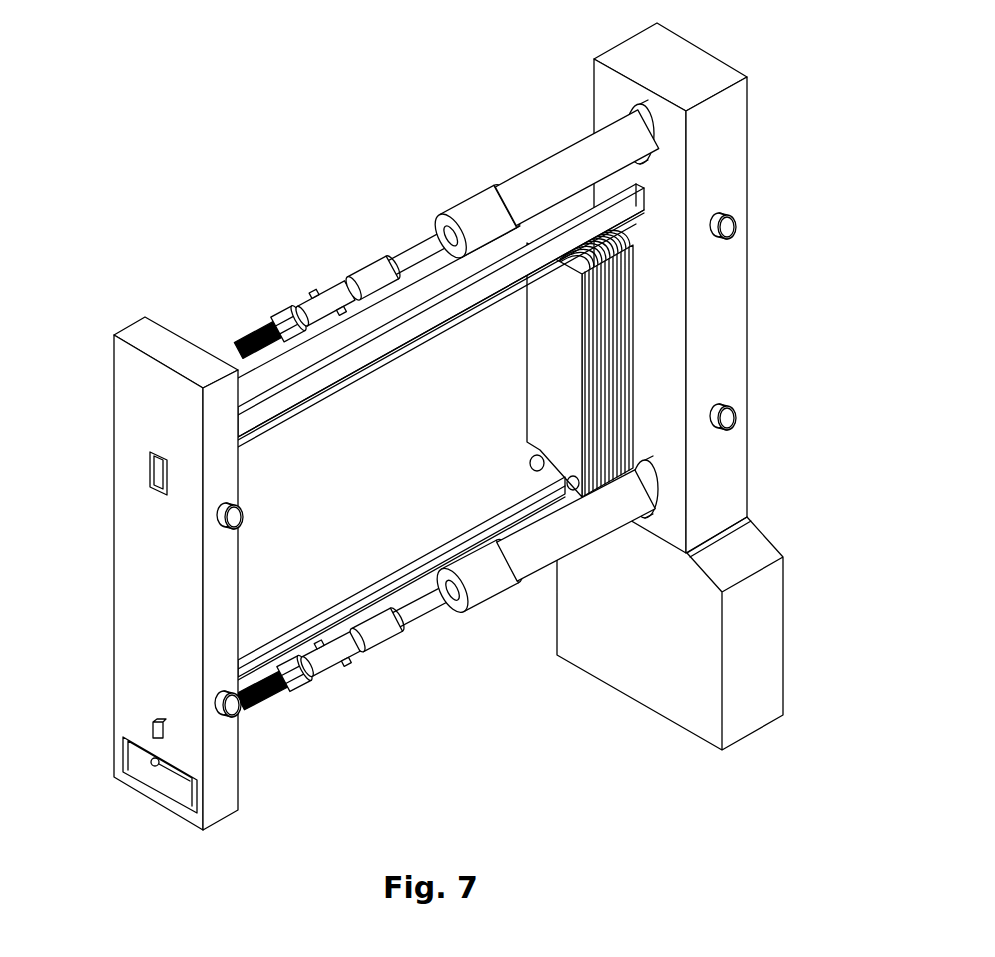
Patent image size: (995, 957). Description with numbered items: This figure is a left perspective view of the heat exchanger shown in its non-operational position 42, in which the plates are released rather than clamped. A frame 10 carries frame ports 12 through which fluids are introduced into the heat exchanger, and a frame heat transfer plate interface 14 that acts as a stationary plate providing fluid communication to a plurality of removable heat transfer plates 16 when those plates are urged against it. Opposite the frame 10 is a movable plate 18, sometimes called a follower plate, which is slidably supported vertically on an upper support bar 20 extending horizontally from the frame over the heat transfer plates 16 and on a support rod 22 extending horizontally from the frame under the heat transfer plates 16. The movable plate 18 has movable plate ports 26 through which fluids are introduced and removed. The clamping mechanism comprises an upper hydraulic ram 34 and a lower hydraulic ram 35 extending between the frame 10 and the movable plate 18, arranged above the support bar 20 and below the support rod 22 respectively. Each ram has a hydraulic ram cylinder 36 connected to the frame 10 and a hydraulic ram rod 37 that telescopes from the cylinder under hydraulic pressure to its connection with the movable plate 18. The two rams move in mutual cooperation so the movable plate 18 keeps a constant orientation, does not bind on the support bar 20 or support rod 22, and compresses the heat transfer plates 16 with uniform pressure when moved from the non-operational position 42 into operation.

The frame 10 is at (715, 78).
The frame ports 12 is at (735, 228).
The frame heat transfer plate interface 14 is at (633, 372).
The heat transfer plates 16 is at (633, 248).
The movable plate 18 is at (143, 568).
The upper support bar 20 is at (150, 467).
The support rod 22 is at (322, 630).
The movable plate ports 26 is at (238, 516).
The upper hydraulic ram 34 is at (538, 168).
The lower hydraulic ram 35 is at (527, 572).
The hydraulic ram cylinder 36 is at (470, 205).
The hydraulic ram rod 37 is at (400, 250).
The non-operational position 42 is at (297, 110).